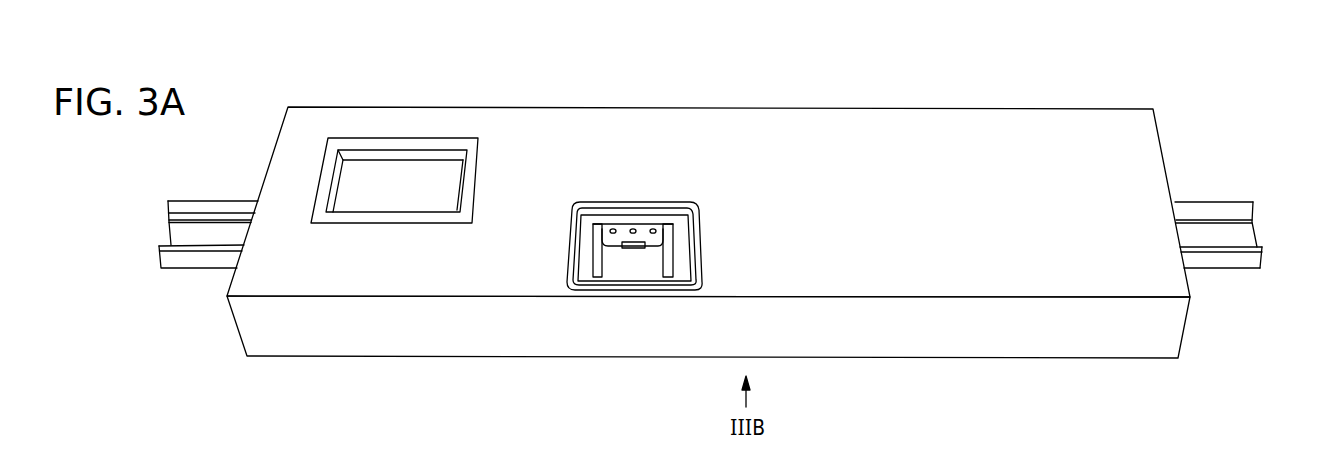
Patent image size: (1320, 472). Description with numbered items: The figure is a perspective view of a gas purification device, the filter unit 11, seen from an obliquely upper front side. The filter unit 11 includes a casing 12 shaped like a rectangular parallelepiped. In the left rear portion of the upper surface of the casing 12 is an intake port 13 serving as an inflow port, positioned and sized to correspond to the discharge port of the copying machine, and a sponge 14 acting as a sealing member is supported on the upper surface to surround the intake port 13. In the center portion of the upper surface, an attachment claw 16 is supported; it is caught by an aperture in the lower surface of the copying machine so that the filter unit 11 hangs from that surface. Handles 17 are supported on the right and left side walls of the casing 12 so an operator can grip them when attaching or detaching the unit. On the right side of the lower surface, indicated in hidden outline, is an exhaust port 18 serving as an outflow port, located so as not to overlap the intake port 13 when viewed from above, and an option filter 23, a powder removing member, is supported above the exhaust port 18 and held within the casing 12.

The filter unit 11 is at (1047, 93).
The casing 12 is at (478, 348).
The intake port 13 is at (438, 204).
The sponge 14 is at (413, 216).
The attachment claw 16 is at (668, 278).
The handles 17 is at (190, 258).
The exhaust port 18 is at (340, 268).
The option filter 23 is at (349, 343).